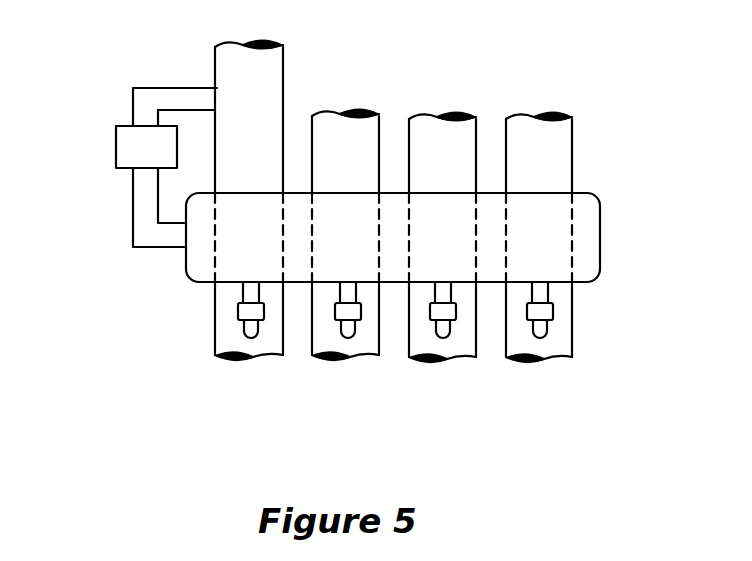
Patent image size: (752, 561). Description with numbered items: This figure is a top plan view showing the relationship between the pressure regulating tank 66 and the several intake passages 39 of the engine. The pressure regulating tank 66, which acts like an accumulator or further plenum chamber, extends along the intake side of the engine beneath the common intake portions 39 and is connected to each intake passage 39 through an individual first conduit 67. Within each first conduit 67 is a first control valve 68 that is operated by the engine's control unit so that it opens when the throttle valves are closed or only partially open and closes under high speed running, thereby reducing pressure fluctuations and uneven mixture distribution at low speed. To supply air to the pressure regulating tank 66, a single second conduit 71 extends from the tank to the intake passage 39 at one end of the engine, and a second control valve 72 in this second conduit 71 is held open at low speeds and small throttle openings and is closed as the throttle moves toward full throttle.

The intake passage 39 is at (270, 78).
The pressure regulating tank 66 is at (203, 268).
The first conduit 67 is at (244, 331).
The first control valve 68 is at (262, 313).
The second conduit 71 is at (133, 218).
The second control valve 72 is at (120, 149).